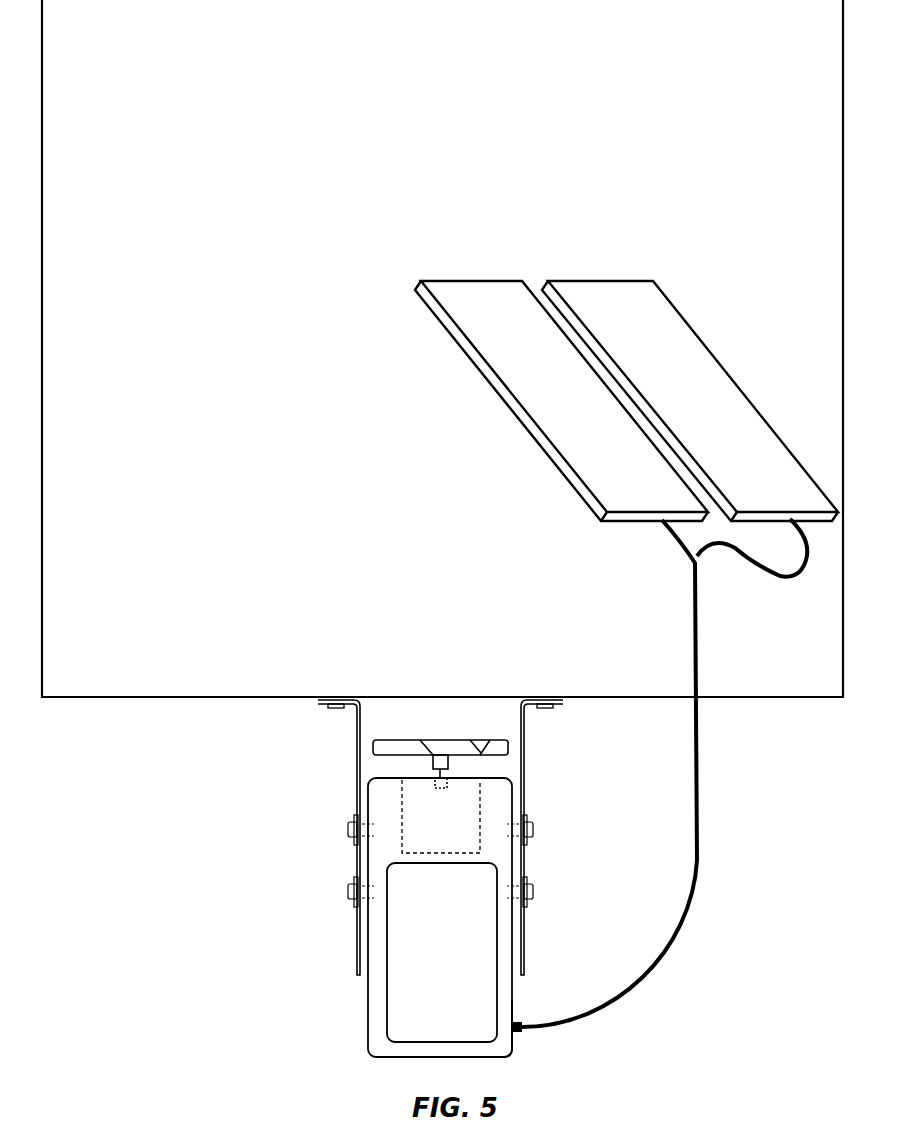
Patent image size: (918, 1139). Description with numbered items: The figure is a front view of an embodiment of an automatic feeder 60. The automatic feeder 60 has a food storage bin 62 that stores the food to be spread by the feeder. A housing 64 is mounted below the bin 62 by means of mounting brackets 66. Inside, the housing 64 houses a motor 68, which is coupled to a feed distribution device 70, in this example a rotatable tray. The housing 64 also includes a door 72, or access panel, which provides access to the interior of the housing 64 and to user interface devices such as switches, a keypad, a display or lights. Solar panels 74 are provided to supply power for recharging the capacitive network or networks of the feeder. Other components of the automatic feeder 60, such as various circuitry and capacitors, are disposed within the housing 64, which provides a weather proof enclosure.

The automatic feeder 60 is at (155, 978).
The food storage bin 62 is at (115, 700).
The housing 64 is at (367, 1045).
The mounting brackets 66 is at (357, 790).
The motor 68 is at (480, 793).
The feed distribution device 70 is at (388, 752).
The door 72 is at (513, 990).
The solar panels 74 is at (581, 281).